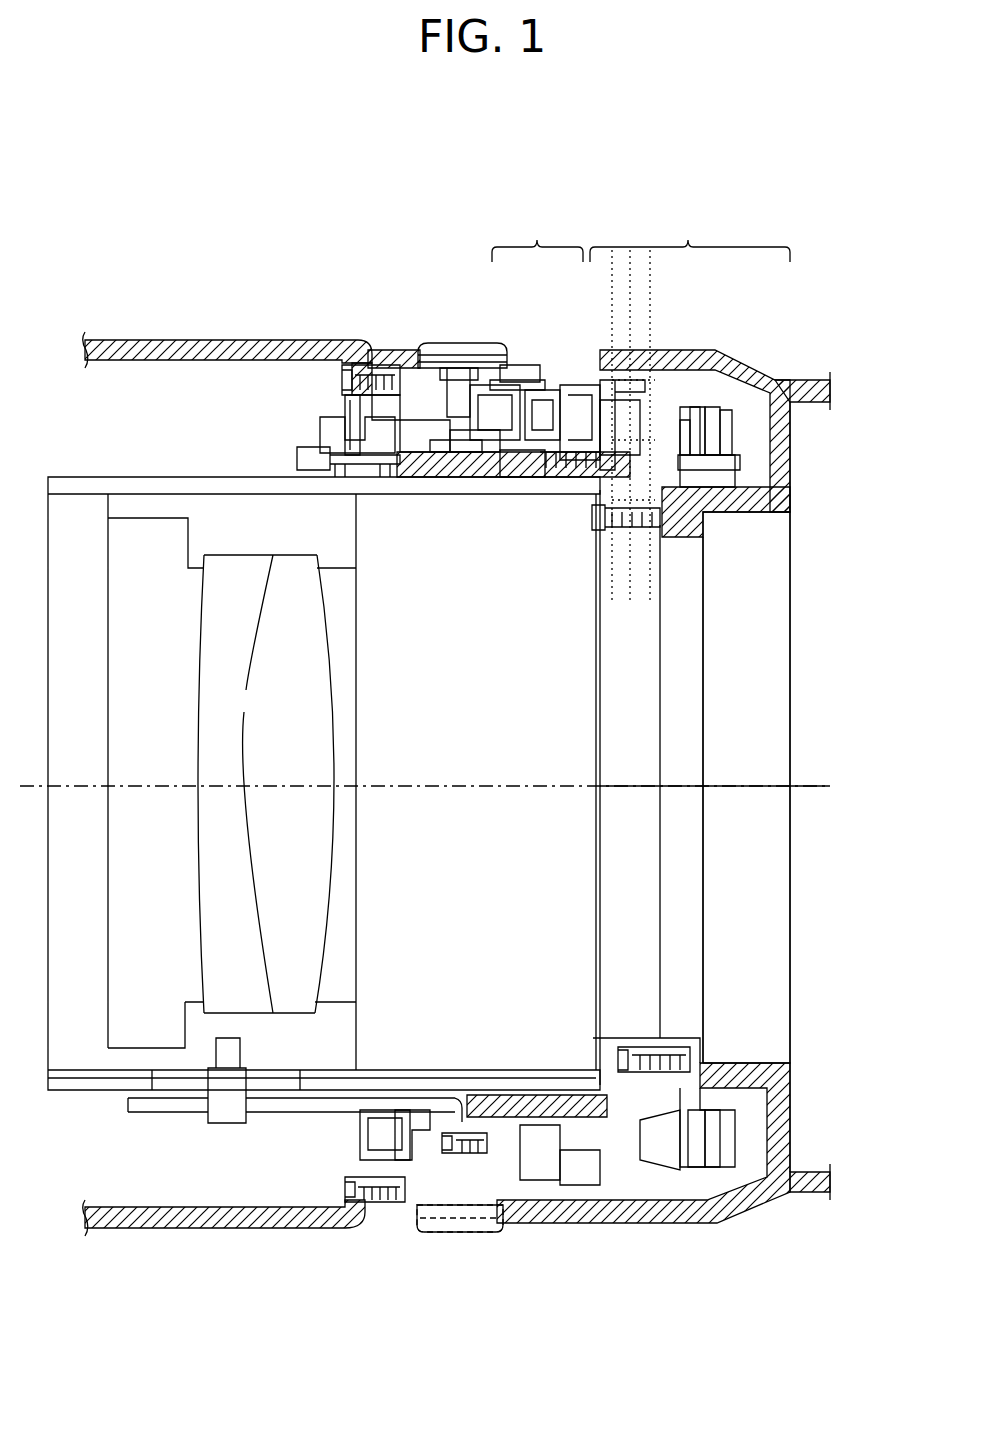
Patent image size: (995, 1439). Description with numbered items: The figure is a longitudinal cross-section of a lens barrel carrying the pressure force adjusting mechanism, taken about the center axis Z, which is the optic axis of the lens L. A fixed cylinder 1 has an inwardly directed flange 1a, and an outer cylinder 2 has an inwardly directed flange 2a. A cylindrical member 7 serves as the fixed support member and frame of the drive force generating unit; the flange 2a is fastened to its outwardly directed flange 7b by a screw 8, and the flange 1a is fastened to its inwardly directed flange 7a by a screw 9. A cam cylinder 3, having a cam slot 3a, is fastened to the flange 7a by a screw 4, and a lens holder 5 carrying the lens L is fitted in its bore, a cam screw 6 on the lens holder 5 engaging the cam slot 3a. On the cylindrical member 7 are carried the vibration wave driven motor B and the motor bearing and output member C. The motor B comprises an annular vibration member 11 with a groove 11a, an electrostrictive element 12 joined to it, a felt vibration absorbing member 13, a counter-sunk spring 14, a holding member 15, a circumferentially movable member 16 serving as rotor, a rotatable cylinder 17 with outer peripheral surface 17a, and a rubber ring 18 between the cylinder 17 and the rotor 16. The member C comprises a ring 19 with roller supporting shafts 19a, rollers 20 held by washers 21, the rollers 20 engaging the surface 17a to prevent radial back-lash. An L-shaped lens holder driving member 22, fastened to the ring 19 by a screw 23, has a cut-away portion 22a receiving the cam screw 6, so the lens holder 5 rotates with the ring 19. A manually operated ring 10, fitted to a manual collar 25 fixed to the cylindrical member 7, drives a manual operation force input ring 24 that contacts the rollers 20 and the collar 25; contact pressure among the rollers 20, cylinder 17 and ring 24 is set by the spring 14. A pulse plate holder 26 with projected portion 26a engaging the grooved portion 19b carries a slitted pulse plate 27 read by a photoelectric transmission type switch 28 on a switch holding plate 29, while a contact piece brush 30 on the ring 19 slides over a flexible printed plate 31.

The fixed cylinder 1 is at (790, 382).
The inwardly directed flange 1a is at (700, 1042).
The outer cylinder 2 is at (182, 340).
The inwardly directed flange 2a is at (362, 362).
The cam cylinder 3 is at (102, 1092).
The cam slot 3a is at (182, 1092).
The screw 4 is at (597, 535).
The lens holder 5 is at (322, 1082).
The cam screw 6 is at (226, 1125).
The cylindrical member 7 is at (476, 478).
The inwardly directed flange 7a is at (720, 520).
The outwardly directed flange 7b is at (382, 395).
The screw 8 is at (345, 368).
The screw 9 is at (625, 1048).
The manually operated ring 10 is at (410, 352).
The vibration member 11 is at (688, 407).
The groove 11a is at (684, 420).
The electrostrictive element 12 is at (698, 407).
The vibration absorbing member 13 is at (712, 407).
The counter-sunk spring 14 is at (728, 410).
The holding member 15 is at (742, 455).
The circumferentially movable member 16 is at (630, 380).
The rotatable cylinder 17 is at (580, 385).
The outer peripheral surface 17a is at (638, 400).
The rubber ring 18 is at (604, 380).
The ring 19 is at (495, 385).
The roller supporting shafts 19a is at (535, 380).
The grooved portion 19b is at (458, 455).
The rollers 20 is at (545, 390).
The washers 21 is at (515, 365).
The lens holder driving member 22 is at (333, 1112).
The cut-away portion 22a is at (272, 1113).
The screw 23 is at (436, 1232).
The manual operation force input ring 24 is at (462, 368).
The manual collar 25 is at (462, 343).
The pulse plate holder 26 is at (420, 455).
The projected portion 26a is at (440, 455).
The pulse plate 27 is at (345, 408).
The photoelectric transmission type switch 28 is at (320, 432).
The switch holding plate 29 is at (300, 455).
The contact piece brush 30 is at (565, 470).
The flexible printed plate 31 is at (525, 478).
The lens L is at (205, 850).
The center axis Z is at (795, 786).
The vibration wave driven motor B is at (690, 231).
The motor bearing and output member C is at (537, 231).